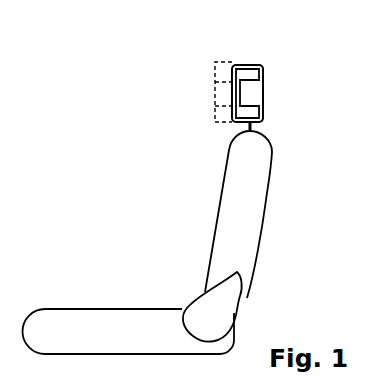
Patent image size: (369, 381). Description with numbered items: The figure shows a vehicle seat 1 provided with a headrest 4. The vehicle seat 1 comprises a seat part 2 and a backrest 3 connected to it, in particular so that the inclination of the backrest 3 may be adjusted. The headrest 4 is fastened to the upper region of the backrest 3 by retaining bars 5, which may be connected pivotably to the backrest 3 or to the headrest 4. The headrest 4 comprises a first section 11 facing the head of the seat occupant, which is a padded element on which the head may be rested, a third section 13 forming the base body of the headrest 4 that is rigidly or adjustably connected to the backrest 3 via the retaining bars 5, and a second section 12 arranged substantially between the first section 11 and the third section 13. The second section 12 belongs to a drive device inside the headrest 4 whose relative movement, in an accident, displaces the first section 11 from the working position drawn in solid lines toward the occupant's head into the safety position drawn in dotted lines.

The vehicle seat 1 is at (153, 172).
The seat part 2 is at (88, 327).
The backrest 3 is at (248, 192).
The headrest 4 is at (200, 65).
The retaining bars 5 is at (253, 128).
The first section 11 is at (242, 65).
The second section 12 is at (249, 90).
The third section 13 is at (262, 102).